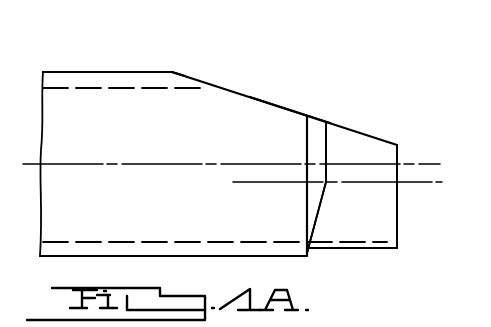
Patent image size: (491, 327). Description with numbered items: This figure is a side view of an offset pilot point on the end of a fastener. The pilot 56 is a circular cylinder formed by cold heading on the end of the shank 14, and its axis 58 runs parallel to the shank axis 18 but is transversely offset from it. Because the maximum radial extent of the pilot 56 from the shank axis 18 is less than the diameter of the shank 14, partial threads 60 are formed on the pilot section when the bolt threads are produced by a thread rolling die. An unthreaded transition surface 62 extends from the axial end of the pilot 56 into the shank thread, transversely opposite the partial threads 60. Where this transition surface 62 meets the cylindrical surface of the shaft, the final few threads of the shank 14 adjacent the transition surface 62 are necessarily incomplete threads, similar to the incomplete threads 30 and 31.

The shank 14 is at (85, 102).
The shank axis 18 is at (27, 165).
The incomplete thread 30 is at (172, 72).
The incomplete thread 31 is at (193, 80).
The unthreaded transition surface 62 is at (277, 102).
The pilot 56 is at (380, 225).
The pilot axis 58 is at (442, 183).
The partial threads 60 is at (385, 253).